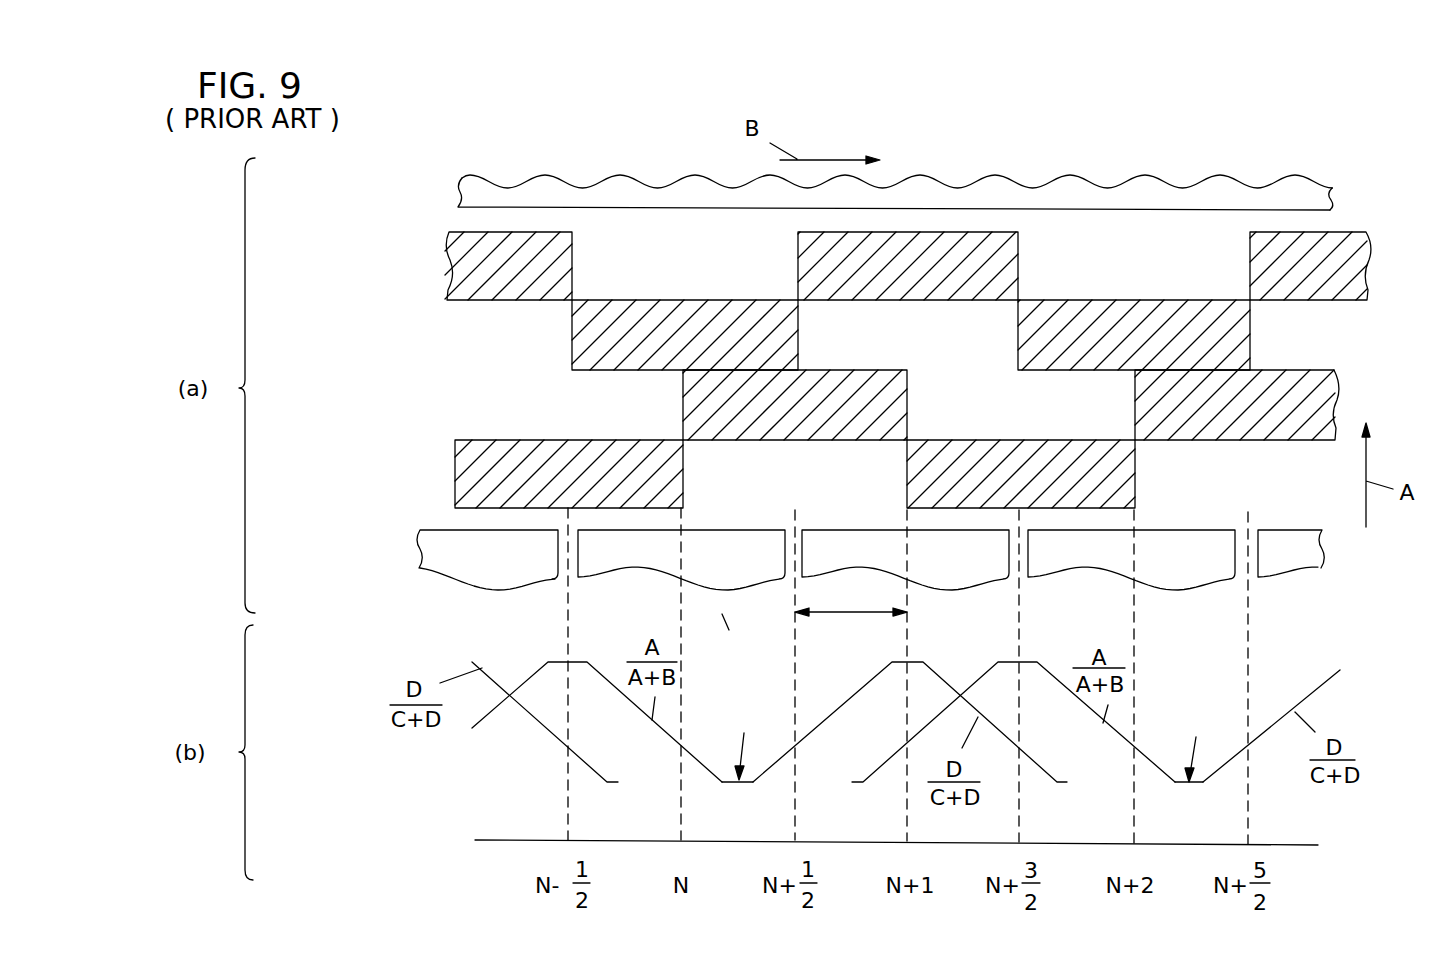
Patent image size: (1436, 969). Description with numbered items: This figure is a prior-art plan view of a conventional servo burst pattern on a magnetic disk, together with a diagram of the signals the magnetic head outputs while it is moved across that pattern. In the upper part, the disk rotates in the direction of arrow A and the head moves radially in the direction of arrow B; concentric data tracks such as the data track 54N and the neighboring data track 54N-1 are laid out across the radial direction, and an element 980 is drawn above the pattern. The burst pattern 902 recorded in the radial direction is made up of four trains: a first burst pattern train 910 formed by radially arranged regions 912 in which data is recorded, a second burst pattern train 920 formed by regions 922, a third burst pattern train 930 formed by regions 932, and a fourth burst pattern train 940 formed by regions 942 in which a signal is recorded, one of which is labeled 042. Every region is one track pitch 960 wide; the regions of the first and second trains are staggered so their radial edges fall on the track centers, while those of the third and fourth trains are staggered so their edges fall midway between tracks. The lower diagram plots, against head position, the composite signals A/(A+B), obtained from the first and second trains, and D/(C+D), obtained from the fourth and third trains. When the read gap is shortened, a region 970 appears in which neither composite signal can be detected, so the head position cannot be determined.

The burst pattern 902 is at (368, 270).
The first burst pattern train 910 is at (415, 452).
The regions in which data is recorded 912 is at (655, 465).
The second burst pattern train 920 is at (415, 382).
The regions in which data is recorded 922 is at (870, 415).
The third burst pattern train 930 is at (413, 317).
The regions in which data is recorded 932 is at (777, 335).
The fourth burst pattern train 940 is at (415, 235).
The regions in which a signal is recorded 942 is at (558, 260).
The fourth head element 042 is at (1270, 265).
The pitch (P) of the data tracks 960 is at (795, 655).
The region in which the position detection signals cannot be detected 970 is at (733, 785).
The recording medium 980 is at (1130, 195).
The data track 54N-1 is at (465, 570).
The data track 54N is at (637, 555).